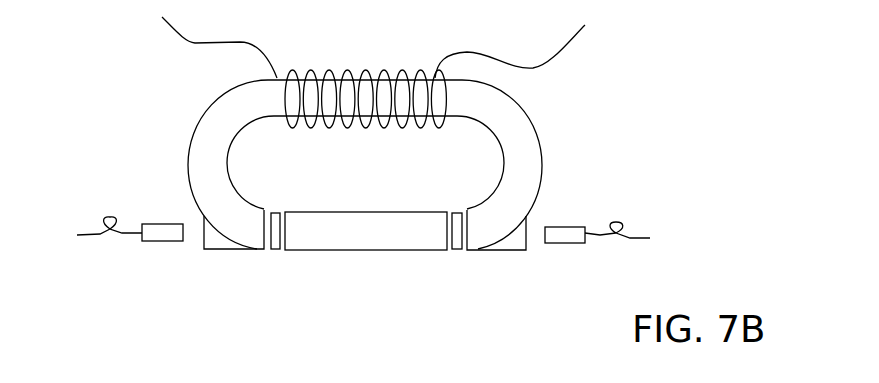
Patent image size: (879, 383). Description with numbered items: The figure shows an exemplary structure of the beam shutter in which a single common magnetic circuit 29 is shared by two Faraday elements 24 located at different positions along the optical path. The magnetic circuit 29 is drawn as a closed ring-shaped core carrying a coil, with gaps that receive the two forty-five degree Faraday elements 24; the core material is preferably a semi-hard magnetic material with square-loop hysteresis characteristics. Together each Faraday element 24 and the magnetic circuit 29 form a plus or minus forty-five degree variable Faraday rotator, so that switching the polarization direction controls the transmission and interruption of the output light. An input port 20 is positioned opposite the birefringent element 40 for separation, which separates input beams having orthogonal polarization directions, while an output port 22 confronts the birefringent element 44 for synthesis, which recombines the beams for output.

The input port 20 is at (158, 241).
The output port 22 is at (570, 236).
The Faraday element 24 is at (273, 249).
The common magnetic circuit 29 is at (528, 132).
The birefringent element for separation 40 is at (223, 249).
The birefringent element for synthesis 44 is at (518, 250).